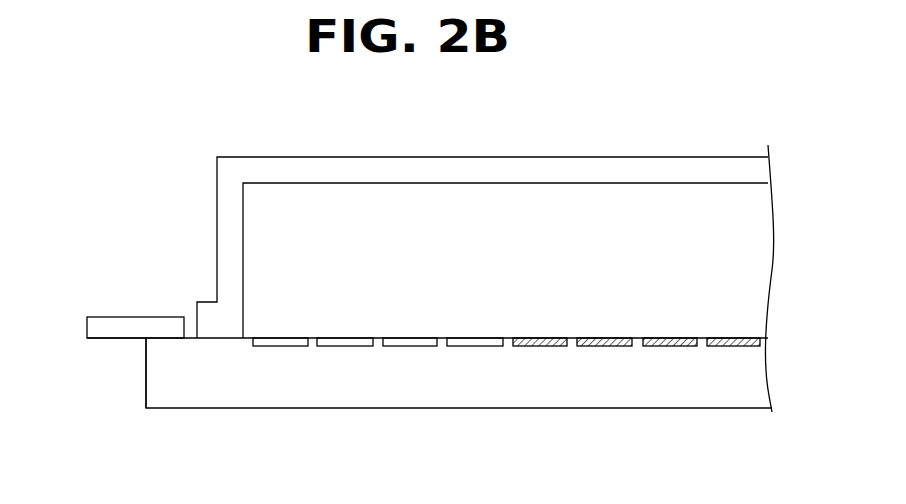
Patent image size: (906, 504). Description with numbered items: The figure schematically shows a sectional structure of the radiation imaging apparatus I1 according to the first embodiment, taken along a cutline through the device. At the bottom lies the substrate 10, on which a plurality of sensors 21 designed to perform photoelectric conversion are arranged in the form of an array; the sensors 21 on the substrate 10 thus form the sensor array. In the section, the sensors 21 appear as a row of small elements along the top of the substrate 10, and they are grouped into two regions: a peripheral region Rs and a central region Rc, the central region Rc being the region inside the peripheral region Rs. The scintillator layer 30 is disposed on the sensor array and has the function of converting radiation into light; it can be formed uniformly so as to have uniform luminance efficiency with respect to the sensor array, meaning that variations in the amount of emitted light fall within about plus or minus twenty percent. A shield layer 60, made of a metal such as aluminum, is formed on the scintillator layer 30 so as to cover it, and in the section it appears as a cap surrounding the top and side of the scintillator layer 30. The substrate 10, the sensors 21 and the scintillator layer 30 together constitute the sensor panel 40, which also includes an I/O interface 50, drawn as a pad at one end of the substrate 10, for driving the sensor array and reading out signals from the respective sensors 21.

The substrate 10 is at (212, 410).
The sensors 21 is at (748, 338).
The scintillator layer 30 is at (577, 222).
The sensor panel 40 is at (82, 338).
The I/O interface 50 is at (119, 316).
The shield layer 60 is at (217, 245).
The peripheral region Rs is at (500, 355).
The central region Rc is at (760, 355).
The radiation imaging apparatus I1 is at (164, 141).